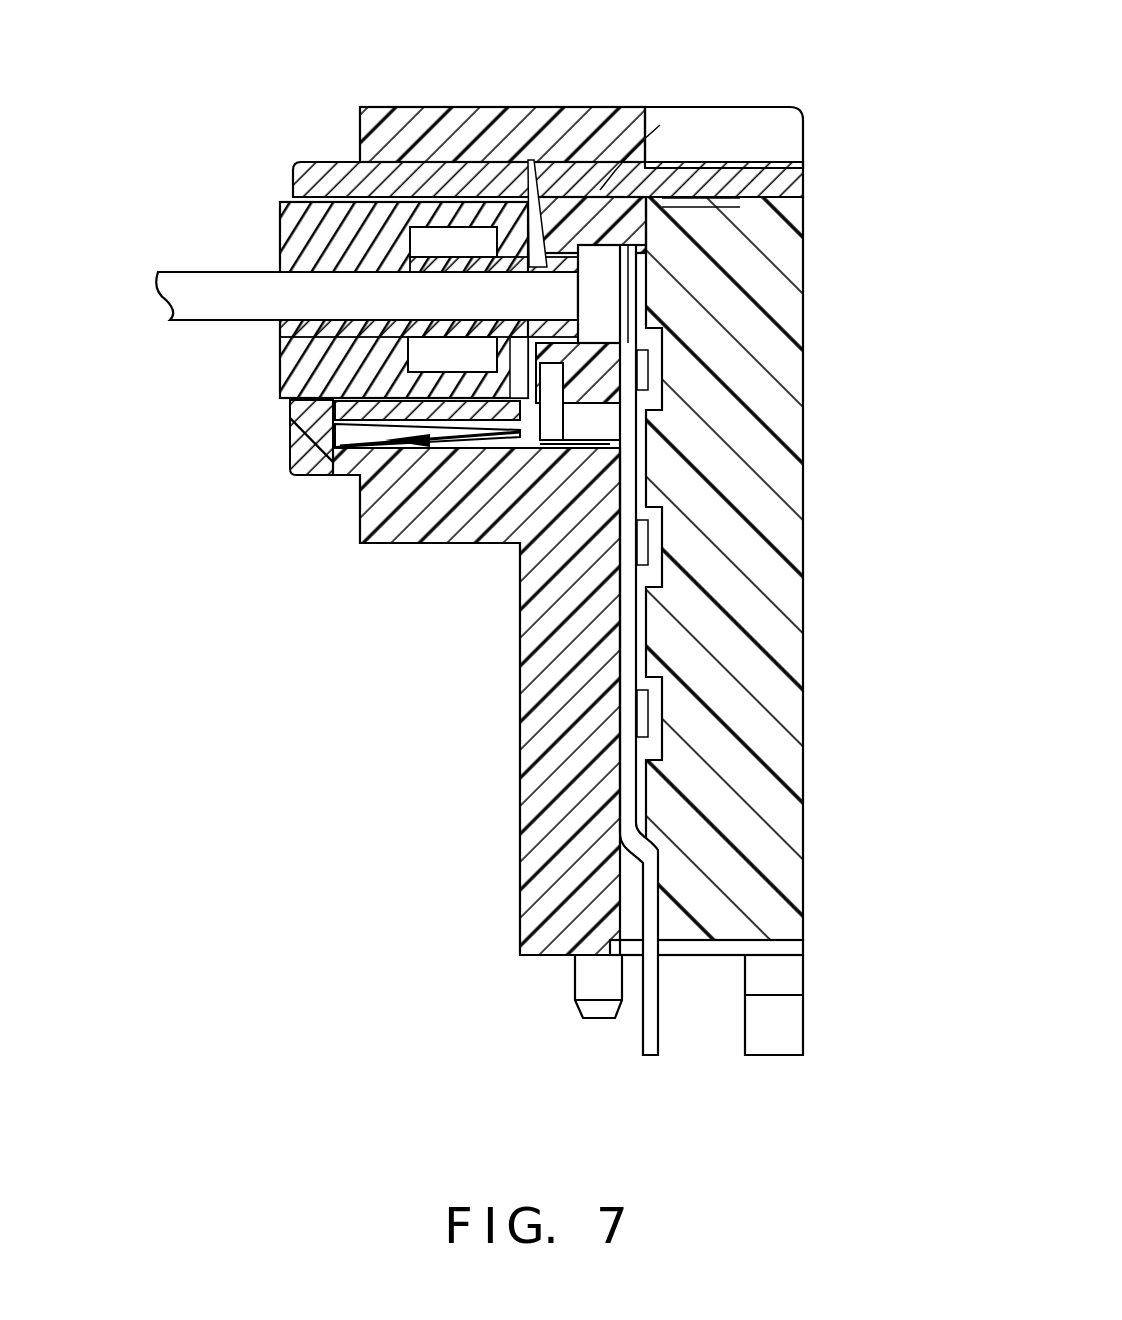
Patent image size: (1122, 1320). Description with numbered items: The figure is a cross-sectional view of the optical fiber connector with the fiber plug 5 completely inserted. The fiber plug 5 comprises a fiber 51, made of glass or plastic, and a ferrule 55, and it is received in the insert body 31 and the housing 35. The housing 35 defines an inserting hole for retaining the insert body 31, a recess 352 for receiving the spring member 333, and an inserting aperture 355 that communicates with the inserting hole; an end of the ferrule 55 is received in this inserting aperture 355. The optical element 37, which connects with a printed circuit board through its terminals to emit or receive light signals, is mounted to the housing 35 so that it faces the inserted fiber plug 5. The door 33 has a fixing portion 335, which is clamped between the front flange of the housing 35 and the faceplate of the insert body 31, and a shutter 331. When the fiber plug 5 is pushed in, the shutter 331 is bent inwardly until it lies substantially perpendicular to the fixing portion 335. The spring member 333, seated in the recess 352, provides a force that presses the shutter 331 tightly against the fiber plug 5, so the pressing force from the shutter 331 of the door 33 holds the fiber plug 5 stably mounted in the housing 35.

The fiber plug 5 is at (280, 210).
The fiber 51 is at (226, 300).
The ferrule 55 is at (528, 160).
The insert body 31 is at (330, 165).
The door 33 is at (333, 447).
The shutter 331 is at (337, 477).
The spring member 333 is at (363, 527).
The fixing portion 335 is at (303, 427).
The housing 35 is at (560, 108).
The recess 352 is at (455, 443).
The inserting aperture 355 is at (543, 267).
The optical element 37 is at (626, 297).